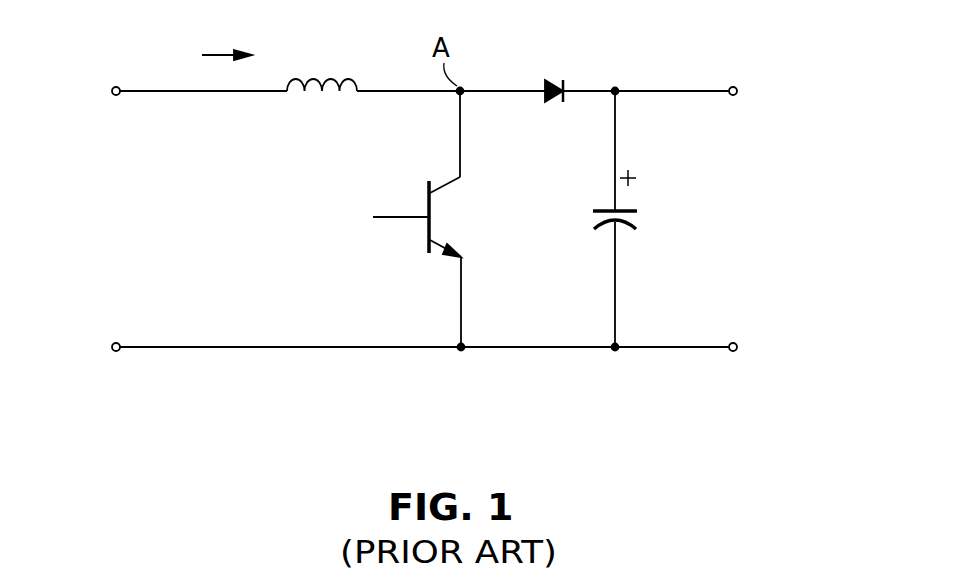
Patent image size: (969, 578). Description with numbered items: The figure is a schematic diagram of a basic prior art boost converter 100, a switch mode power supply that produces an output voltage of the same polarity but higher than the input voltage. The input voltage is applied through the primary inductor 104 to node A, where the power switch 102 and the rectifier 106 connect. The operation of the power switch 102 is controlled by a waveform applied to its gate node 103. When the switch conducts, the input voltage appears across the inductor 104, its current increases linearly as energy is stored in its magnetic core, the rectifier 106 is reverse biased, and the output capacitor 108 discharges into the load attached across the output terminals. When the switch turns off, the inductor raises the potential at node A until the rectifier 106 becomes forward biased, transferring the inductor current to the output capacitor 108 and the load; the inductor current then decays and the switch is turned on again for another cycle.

The boost converter 100 is at (470, 432).
The power switch Q2 102 is at (443, 257).
The gate node 103 is at (392, 214).
The primary inductor L 104 is at (327, 78).
The rectifier D1 106 is at (553, 78).
The output capacitor C0 108 is at (636, 208).